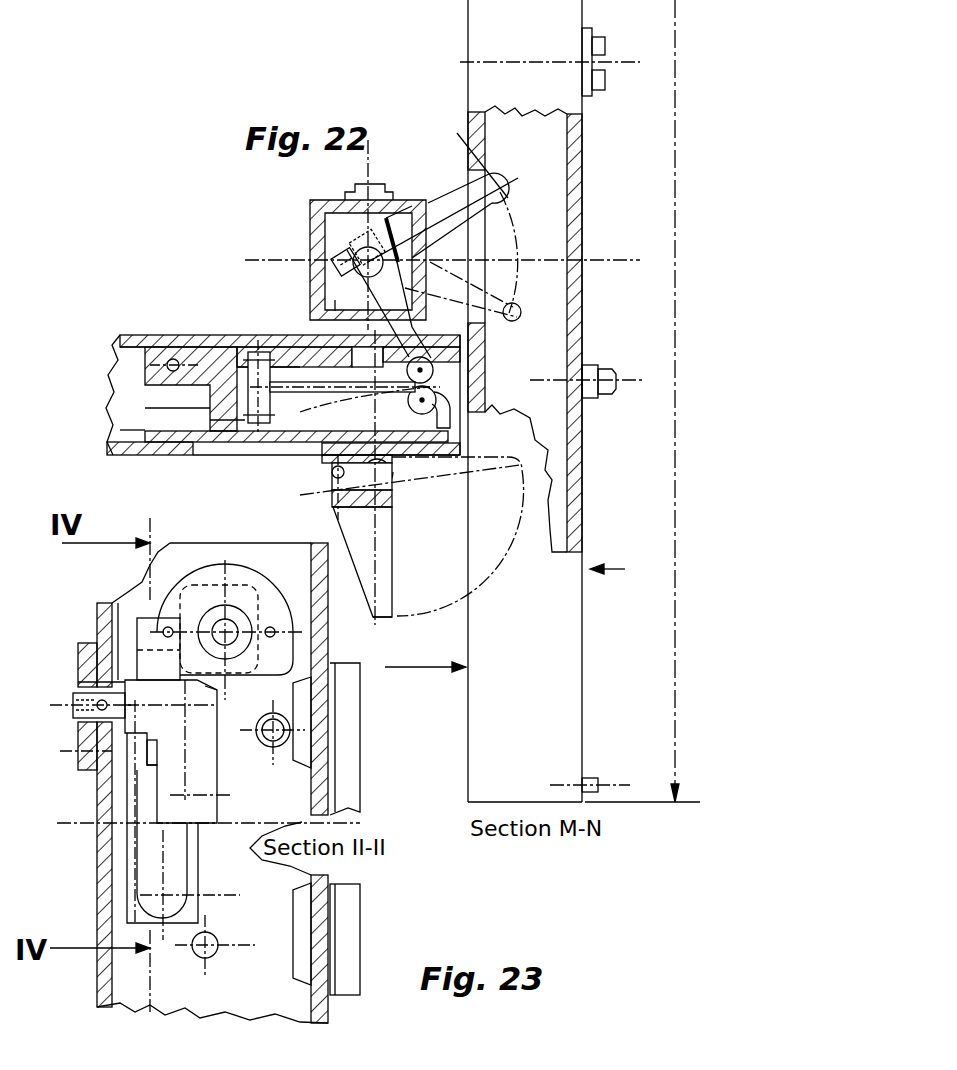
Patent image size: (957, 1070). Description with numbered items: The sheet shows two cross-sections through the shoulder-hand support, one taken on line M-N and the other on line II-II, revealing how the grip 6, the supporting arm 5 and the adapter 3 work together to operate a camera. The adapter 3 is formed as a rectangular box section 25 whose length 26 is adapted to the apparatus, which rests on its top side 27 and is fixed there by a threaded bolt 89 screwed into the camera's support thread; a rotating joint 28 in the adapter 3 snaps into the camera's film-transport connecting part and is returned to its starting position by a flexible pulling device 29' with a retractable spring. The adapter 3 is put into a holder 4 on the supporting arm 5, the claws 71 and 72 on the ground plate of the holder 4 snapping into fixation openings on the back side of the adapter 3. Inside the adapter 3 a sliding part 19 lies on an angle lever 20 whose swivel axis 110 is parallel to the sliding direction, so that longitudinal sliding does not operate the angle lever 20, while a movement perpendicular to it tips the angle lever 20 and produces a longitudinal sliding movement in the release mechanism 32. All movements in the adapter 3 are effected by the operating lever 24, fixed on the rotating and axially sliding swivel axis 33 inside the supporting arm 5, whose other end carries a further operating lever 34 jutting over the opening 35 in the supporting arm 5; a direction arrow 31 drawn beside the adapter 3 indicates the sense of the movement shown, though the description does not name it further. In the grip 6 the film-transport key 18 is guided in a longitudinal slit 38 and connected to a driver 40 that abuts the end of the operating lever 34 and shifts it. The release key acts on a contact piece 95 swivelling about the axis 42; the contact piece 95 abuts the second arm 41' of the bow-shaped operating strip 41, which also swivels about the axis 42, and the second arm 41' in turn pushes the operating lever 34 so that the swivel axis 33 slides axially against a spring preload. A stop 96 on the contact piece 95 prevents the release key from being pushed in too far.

In FIG. 22, the adapter 3 is at (535, 146).
In FIG. 23, the adapter 3 is at (130, 968).
In FIG. 23, the holder 4 is at (376, 915).
In FIG. 22, the supporting arm 5 is at (401, 208).
In FIG. 22, the grip 6 is at (150, 455).
In FIG. 22, the key 18 is at (412, 477).
In FIG. 23, the sliding part 19 is at (148, 630).
In FIG. 23, the angle lever 20 is at (177, 751).
In FIG. 22, the operating lever 24 is at (452, 201).
In FIG. 23, the operating lever 24 is at (153, 754).
In FIG. 22, the rectangular box section 25 is at (576, 130).
In FIG. 22, the length 26 is at (642, 401).
In FIG. 22, the top side 27 is at (624, 570).
In FIG. 22, the rotating joint 28 is at (606, 42).
In FIG. 23, the flexible pulling device 29' is at (228, 626).
In FIG. 22, the direction arrow 31 is at (425, 656).
In FIG. 23, the release mechanism 32 is at (88, 706).
In FIG. 22, the swivel axis 33 is at (355, 257).
In FIG. 22, the operating lever 34 is at (414, 412).
In FIG. 22, the opening 35 is at (337, 294).
In FIG. 22, the longitudinal slit 38 is at (218, 450).
In FIG. 22, the driver 40 is at (440, 408).
In FIG. 22, the operating strip 41 is at (473, 362).
In FIG. 22, the second arm 41' is at (345, 455).
In FIG. 22, the axis 42 is at (259, 353).
In FIG. 23, the claw 71 is at (300, 760).
In FIG. 23, the claw 72 is at (293, 920).
In FIG. 22, the threaded bolt 89 is at (594, 350).
In FIG. 22, the contact piece 95 is at (262, 382).
In FIG. 22, the stop 96 is at (243, 450).
In FIG. 23, the swivel axis 110 is at (207, 697).